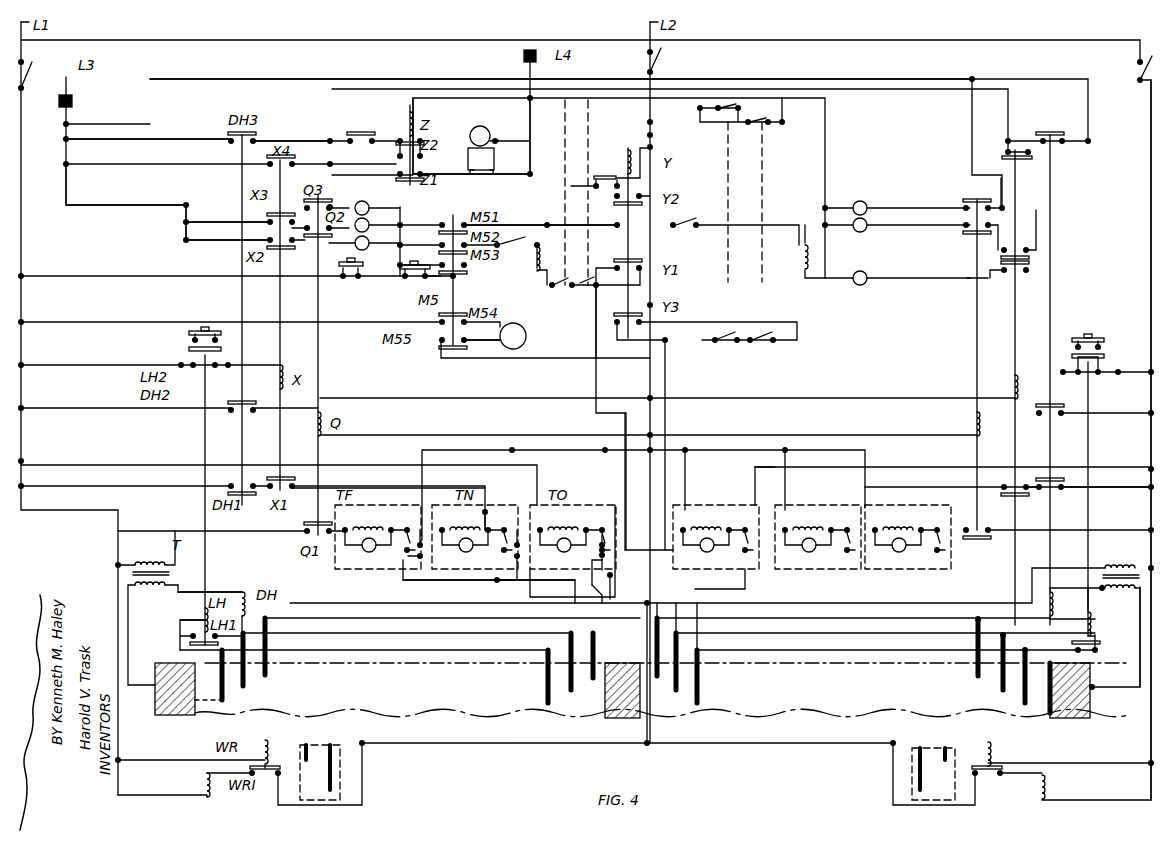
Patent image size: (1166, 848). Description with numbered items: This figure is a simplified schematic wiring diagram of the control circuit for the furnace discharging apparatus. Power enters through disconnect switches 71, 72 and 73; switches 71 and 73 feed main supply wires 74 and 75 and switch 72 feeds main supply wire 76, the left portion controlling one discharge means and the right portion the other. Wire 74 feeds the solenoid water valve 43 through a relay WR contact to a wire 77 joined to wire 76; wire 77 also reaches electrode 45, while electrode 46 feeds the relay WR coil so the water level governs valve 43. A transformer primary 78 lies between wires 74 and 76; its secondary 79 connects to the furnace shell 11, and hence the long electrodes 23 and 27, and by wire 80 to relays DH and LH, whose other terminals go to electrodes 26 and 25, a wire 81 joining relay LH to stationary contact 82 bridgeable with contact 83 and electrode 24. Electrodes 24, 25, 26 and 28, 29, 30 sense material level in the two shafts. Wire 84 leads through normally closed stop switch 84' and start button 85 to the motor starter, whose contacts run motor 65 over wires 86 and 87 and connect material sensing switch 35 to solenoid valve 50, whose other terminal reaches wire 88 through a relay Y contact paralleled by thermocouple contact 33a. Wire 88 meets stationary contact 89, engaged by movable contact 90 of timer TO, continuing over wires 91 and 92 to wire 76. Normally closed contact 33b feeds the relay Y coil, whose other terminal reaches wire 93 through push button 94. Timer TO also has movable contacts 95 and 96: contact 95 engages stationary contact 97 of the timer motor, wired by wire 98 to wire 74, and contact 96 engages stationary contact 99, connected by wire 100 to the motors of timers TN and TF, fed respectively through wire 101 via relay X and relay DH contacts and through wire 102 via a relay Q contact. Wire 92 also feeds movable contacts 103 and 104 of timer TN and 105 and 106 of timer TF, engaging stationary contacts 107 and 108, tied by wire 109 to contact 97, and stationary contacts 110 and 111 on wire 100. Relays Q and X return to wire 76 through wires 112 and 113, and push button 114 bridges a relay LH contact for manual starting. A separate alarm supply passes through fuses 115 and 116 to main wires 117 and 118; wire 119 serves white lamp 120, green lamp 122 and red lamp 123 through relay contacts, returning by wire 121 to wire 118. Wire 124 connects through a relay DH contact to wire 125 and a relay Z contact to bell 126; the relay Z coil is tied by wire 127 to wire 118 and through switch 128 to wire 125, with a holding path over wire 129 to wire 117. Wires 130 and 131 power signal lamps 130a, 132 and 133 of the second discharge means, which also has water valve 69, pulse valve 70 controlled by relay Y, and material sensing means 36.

The disconnect switch 71 is at (30, 74).
The disconnect switch 72 is at (660, 66).
The disconnect switch 73 is at (1138, 74).
The main supply wire 74 is at (118, 746).
The main supply wire 75 is at (1150, 146).
The main supply wire 76 is at (652, 186).
The wire 77 is at (404, 752).
The transformer primary 78 is at (152, 558).
The transformer secondary 79 is at (164, 596).
The wire 80 is at (238, 590).
The wire 81 is at (180, 622).
The stationary contact 82 is at (180, 650).
The contact 83 is at (213, 643).
The wire 84 is at (229, 268).
The stop switch 84' is at (355, 278).
The start button 85 is at (406, 280).
The wire 86 is at (336, 312).
The wire 87 is at (526, 360).
The wire 88 is at (592, 330).
The stationary contact 89 is at (594, 588).
The movable contact 90 is at (598, 604).
The wire 91 is at (606, 458).
The wire 92 is at (580, 438).
The wire 93 is at (542, 224).
The push button 94 is at (595, 192).
The movable contact 95 is at (599, 537).
The movable contact 96 is at (580, 560).
The stationary contact 97 is at (573, 551).
The wire 98 is at (556, 484).
The stationary contact 99 is at (614, 568).
The wire 100 is at (548, 588).
The wire 101 is at (354, 486).
The wire 102 is at (322, 536).
The movable contact 103 is at (506, 550).
The movable contact 104 is at (513, 573).
The movable contact 105 is at (407, 527).
The movable contact 106 is at (402, 560).
The stationary contact 107 is at (506, 566).
The stationary contact 108 is at (404, 570).
The wire 109 is at (482, 584).
The stationary contact 110 is at (503, 512).
The stationary contact 111 is at (383, 513).
The wire 112 is at (478, 434).
The wire 113 is at (482, 396).
The manually operable switch 114 is at (190, 336).
The fuse 115 is at (73, 104).
The fuse 116 is at (520, 58).
The main wire 117 is at (73, 186).
The main wire 118 is at (524, 113).
The wire 119 is at (180, 236).
The lamp 120 is at (354, 260).
The wire 121 is at (419, 240).
The lamp 122 is at (377, 218).
The lamp 123 is at (372, 198).
The wire 124 is at (202, 140).
The wire 125 is at (314, 140).
The bell 126 is at (466, 163).
The wire 127 is at (456, 110).
The switch 128 is at (357, 133).
The wire 129 is at (382, 166).
The wire 130 is at (458, 78).
The signal lamp 130a is at (870, 274).
The wire 131 is at (811, 110).
The signal lamp 132 is at (870, 232).
The signal lamp 133 is at (868, 192).
The shell 11 is at (153, 706).
The electrode 23 is at (215, 712).
The electrode 24 is at (226, 696).
The electrode 25 is at (248, 686).
The electrode 26 is at (270, 674).
The electrode 27 is at (1044, 714).
The electrode 28 is at (1020, 696).
The electrode 29 is at (996, 692).
The electrode 30 is at (970, 678).
The contact 33a is at (550, 290).
The normally closed contact 33b is at (584, 288).
The material sensing means 35 is at (528, 238).
The material sensing means 36 is at (686, 234).
The solenoid-operated water valve 43 is at (202, 783).
The electrode 45 is at (320, 772).
The electrode 46 is at (308, 746).
The solenoid-operated valve 50 is at (532, 269).
The motor 65 is at (528, 342).
The solenoid-operated valve 69 is at (1048, 788).
The solenoid-operated valve 70 is at (802, 262).